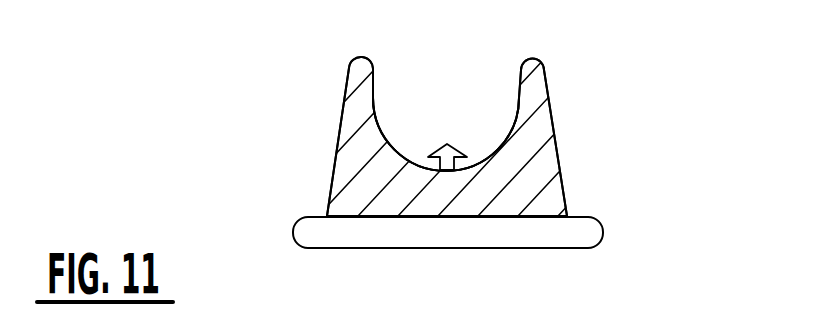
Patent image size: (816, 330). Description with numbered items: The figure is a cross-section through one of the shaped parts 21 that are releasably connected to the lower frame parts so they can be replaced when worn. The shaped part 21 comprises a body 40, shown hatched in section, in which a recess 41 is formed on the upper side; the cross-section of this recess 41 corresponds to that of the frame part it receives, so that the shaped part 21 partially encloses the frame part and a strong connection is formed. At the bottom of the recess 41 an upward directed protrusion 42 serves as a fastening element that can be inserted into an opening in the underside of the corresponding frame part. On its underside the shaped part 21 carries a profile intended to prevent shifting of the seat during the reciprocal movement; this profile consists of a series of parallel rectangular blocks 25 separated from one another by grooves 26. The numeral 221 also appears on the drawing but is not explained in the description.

The clip element 221 is at (424, 108).
The shaped part 21 is at (285, 171).
The rectangular block 25 is at (307, 235).
The groove 26 is at (513, 218).
The body 40 is at (542, 172).
The recess 41 is at (380, 131).
The upward directed protrusion 42 is at (450, 146).